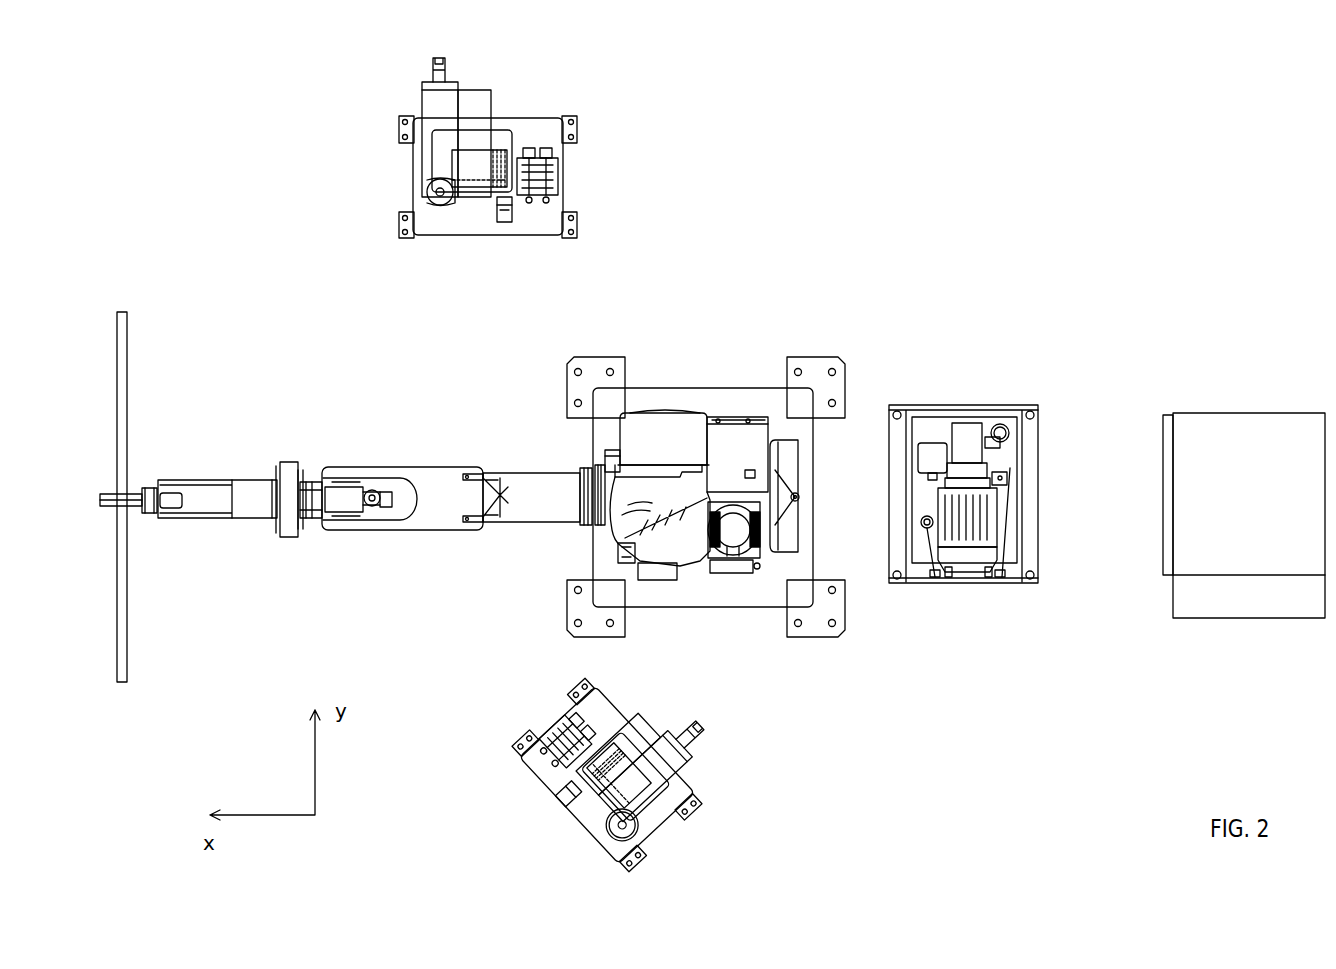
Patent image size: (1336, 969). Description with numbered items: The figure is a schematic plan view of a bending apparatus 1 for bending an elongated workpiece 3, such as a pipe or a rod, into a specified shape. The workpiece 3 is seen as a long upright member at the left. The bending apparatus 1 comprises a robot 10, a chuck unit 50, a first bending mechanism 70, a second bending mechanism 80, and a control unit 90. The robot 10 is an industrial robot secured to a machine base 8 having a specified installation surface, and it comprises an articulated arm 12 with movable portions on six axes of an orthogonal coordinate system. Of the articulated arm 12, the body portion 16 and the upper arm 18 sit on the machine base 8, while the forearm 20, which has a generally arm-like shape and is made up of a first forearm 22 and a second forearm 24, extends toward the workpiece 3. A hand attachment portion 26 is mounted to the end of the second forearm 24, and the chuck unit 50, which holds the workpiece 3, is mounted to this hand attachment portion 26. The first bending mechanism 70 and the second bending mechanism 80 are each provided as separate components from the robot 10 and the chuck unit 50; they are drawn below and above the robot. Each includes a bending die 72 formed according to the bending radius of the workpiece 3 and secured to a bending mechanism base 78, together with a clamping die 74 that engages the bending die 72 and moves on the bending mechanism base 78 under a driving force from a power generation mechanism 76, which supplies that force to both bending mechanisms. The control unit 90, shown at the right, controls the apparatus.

The bending apparatus 1 is at (890, 171).
The workpiece 3 is at (127, 345).
The machine base 8 is at (733, 400).
The robot 10 is at (614, 311).
The articulated arm 12 is at (490, 441).
The body portion 16 is at (652, 448).
The upper arm 18 is at (637, 517).
The forearm 20 is at (537, 607).
The first forearm 22 is at (583, 523).
The second forearm 24 is at (427, 522).
The hand attachment portion 26 is at (317, 519).
The chuck unit 50 is at (211, 458).
The first bending mechanism 70 is at (682, 703).
The bending die 72 is at (450, 208).
The clamping die 74 is at (427, 181).
The power generation mechanism 76 is at (976, 386).
The bending mechanism base 78 is at (552, 220).
The second bending mechanism 80 is at (384, 105).
The control unit 90 is at (1245, 413).